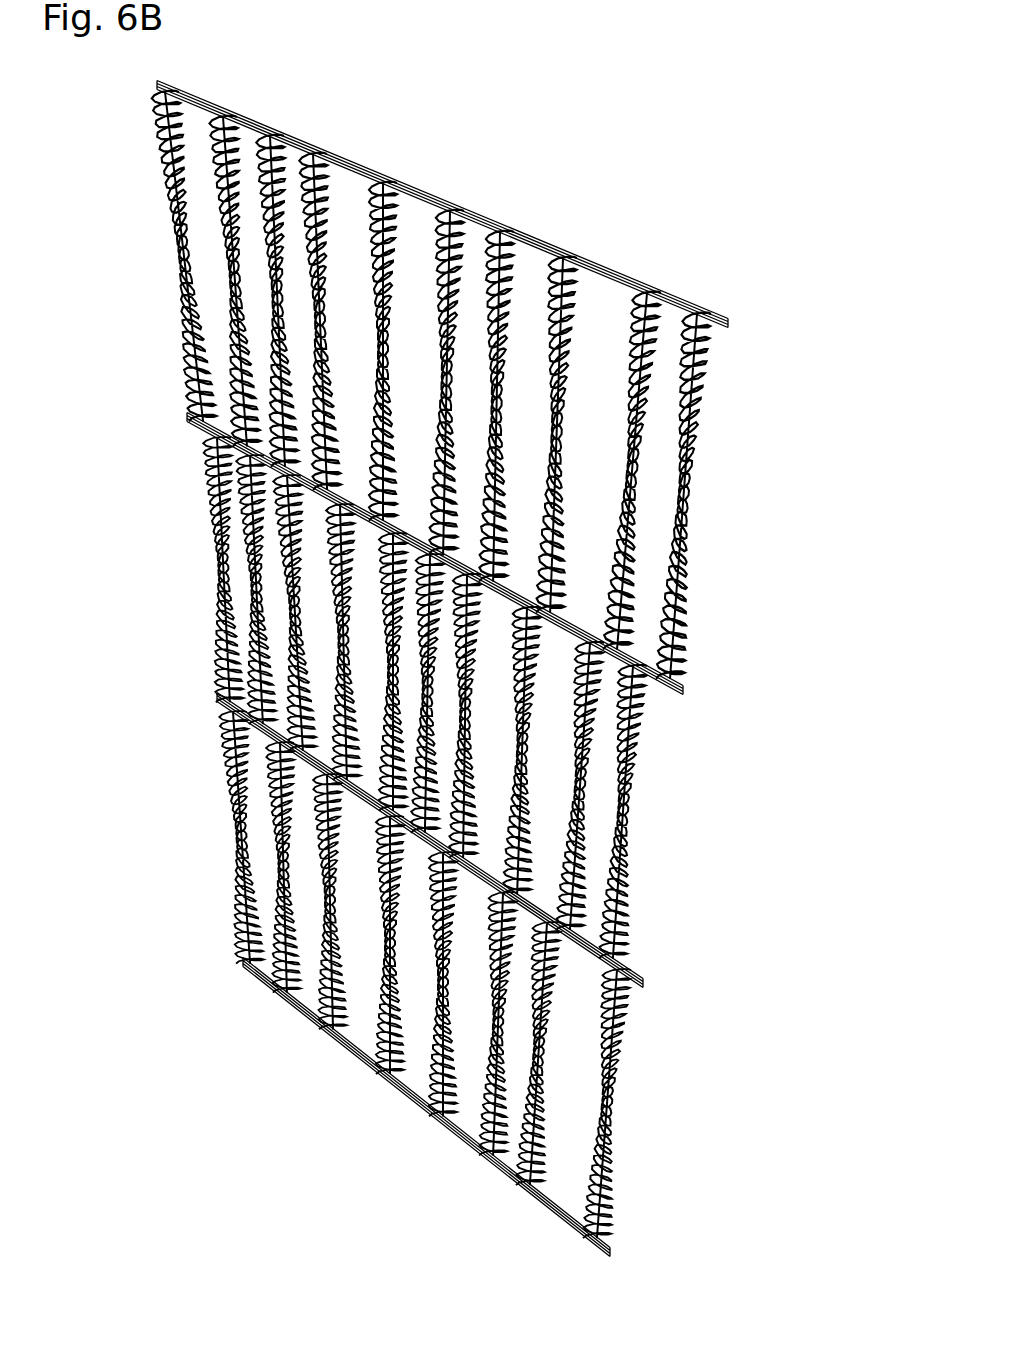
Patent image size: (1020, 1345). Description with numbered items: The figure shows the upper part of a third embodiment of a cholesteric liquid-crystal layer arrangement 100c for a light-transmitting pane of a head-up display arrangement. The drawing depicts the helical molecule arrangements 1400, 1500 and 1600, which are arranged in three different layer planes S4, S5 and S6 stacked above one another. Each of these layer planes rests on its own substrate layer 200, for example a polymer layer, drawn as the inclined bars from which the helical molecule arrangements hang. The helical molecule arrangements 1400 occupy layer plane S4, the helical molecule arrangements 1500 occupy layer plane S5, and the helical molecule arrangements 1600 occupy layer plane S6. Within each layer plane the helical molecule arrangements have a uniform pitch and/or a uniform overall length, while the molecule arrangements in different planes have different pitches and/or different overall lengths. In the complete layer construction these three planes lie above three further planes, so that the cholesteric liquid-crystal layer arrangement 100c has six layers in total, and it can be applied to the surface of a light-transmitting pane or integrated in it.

The cholesteric liquid-crystal layer arrangement 100c is at (518, 165).
The substrate layer 200 is at (735, 322).
The helical molecule arrangement 1600 is at (732, 497).
The helical molecule arrangement 1500 is at (695, 862).
The helical molecule arrangement 1400 is at (680, 1115).
The layer plane S6 is at (152, 333).
The layer plane S5 is at (185, 649).
The layer plane S4 is at (191, 877).